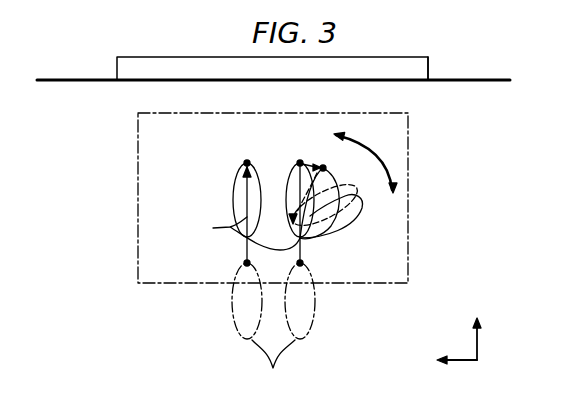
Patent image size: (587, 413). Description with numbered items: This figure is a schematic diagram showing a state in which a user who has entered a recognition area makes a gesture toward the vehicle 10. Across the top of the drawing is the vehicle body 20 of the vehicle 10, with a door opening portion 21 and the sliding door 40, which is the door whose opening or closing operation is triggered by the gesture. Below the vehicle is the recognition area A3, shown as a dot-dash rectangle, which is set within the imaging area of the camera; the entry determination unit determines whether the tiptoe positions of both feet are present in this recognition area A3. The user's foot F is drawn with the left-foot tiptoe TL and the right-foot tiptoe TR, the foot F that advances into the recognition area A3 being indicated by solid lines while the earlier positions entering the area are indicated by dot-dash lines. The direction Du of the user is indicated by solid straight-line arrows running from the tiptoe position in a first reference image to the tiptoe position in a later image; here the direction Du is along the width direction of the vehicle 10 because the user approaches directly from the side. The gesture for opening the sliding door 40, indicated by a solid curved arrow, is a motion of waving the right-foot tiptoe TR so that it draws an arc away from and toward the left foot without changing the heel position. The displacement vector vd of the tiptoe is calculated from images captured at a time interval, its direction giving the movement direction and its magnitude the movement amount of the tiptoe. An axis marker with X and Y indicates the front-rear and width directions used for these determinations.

The vehicle 10 is at (295, 94).
The vehicle body 20 is at (473, 81).
The door opening portion 21 is at (118, 73).
The sliding door 40 is at (418, 75).
The recognition area A3 is at (367, 284).
The left-foot tiptoe TL is at (247, 163).
The right-foot tiptoe TR is at (300, 163).
The foot F is at (300, 163).
The direction of the user Du is at (246, 233).
The displacement vector vd is at (305, 161).
The X axis X is at (476, 328).
The Y axis Y is at (448, 360).